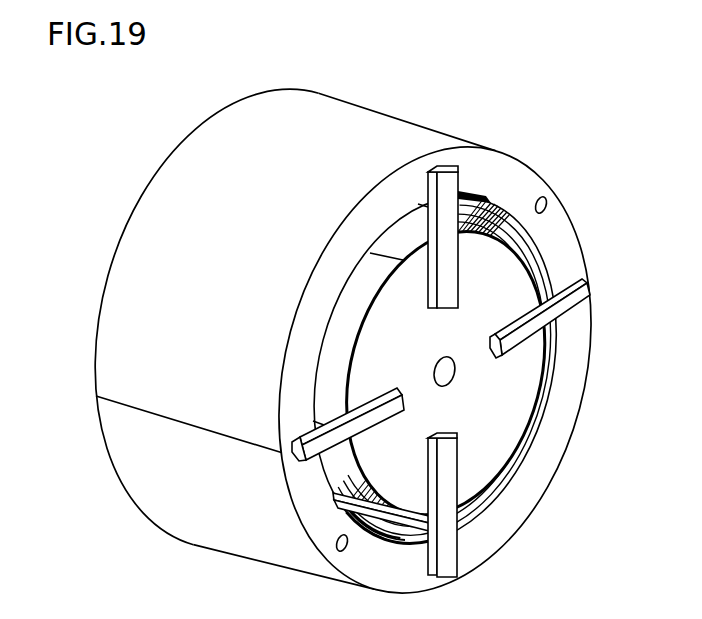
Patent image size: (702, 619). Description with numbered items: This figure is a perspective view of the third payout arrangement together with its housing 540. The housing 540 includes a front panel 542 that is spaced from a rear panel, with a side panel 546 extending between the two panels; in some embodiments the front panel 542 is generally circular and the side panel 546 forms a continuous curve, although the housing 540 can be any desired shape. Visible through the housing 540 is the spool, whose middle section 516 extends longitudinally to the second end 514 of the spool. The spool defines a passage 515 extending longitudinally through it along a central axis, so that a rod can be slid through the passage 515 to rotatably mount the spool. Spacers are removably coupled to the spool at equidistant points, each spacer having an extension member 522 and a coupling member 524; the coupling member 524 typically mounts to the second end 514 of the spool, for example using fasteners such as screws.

The side panel 546 is at (233, 138).
The housing 540 is at (500, 172).
The middle section 516 is at (353, 298).
The second end 514 is at (514, 286).
The coupling member 524 is at (585, 296).
The passage 515 is at (453, 377).
The front panel 542 is at (521, 483).
The extension member 522 is at (403, 518).